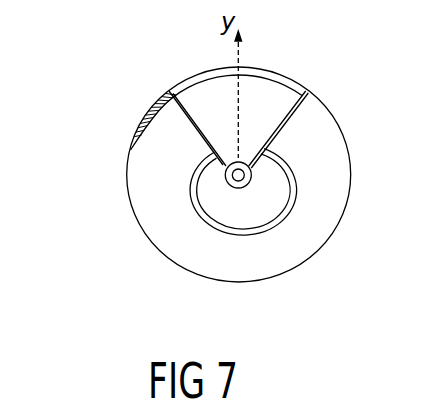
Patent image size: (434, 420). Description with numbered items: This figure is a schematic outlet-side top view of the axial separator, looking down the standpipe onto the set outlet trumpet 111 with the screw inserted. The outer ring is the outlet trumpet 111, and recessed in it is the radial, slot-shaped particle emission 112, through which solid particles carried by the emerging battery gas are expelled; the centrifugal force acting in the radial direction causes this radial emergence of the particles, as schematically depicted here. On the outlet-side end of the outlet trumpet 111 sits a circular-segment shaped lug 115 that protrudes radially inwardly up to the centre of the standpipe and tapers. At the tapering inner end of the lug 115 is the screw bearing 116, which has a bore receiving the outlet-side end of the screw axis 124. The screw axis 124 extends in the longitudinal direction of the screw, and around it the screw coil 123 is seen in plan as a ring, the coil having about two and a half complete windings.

The outlet trumpet 111 is at (133, 127).
The particle emission 112 is at (306, 91).
The lug 115 is at (258, 118).
The screw bearing 116 is at (225, 176).
The screw coil 123 is at (259, 211).
The screw axis 124 is at (252, 175).